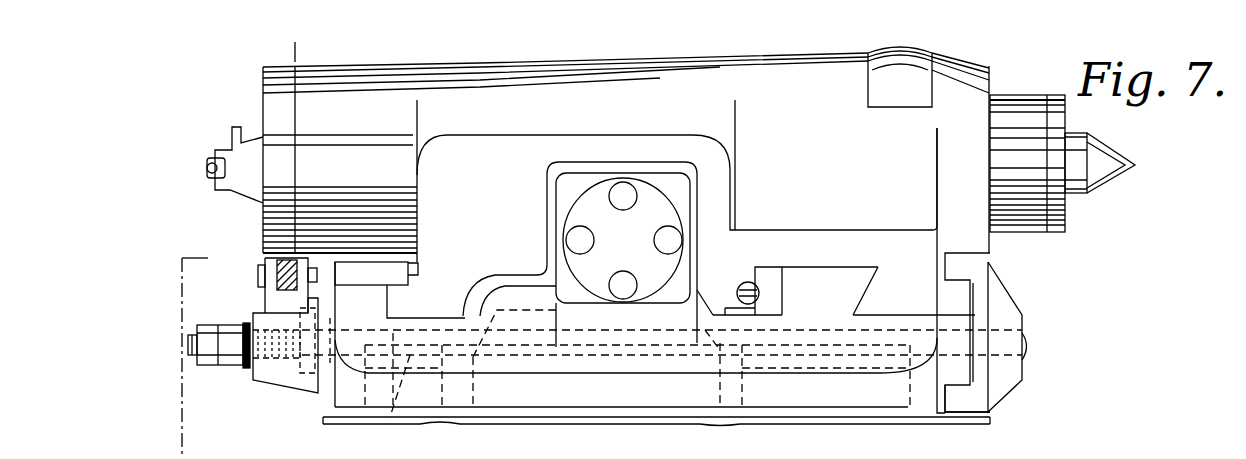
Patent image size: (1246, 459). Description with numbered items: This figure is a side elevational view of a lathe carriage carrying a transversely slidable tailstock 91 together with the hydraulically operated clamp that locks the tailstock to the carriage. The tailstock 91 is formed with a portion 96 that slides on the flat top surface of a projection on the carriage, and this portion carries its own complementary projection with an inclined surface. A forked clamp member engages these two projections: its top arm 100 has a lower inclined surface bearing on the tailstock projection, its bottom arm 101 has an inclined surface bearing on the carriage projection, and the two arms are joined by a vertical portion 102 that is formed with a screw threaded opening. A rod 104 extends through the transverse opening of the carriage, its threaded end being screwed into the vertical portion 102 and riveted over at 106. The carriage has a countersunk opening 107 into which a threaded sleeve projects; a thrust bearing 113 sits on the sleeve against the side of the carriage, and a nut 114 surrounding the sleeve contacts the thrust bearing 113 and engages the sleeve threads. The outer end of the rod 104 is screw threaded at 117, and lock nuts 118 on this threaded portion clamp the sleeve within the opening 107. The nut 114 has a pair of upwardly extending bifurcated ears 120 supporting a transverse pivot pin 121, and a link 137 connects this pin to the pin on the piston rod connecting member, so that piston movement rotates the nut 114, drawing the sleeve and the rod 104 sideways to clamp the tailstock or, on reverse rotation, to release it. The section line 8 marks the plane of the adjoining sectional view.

The section line 8- 8 is at (295, 48).
The tailstock 91 is at (975, 247).
The portion 96 is at (893, 296).
The top arm 100 is at (955, 268).
The bottom arm 101 is at (970, 403).
The vertical portion 102 is at (1000, 304).
The rod 104 is at (622, 345).
The riveted end 106 is at (1030, 345).
The countersunk opening 107 is at (390, 416).
The thrust bearing 113 is at (293, 383).
The nut 114 is at (250, 313).
The screw threaded portion 117 is at (188, 345).
The lock nuts 118 is at (228, 368).
The bifurcated ears 120 is at (265, 262).
The pivot pin 121 is at (258, 278).
The link 137 is at (297, 286).